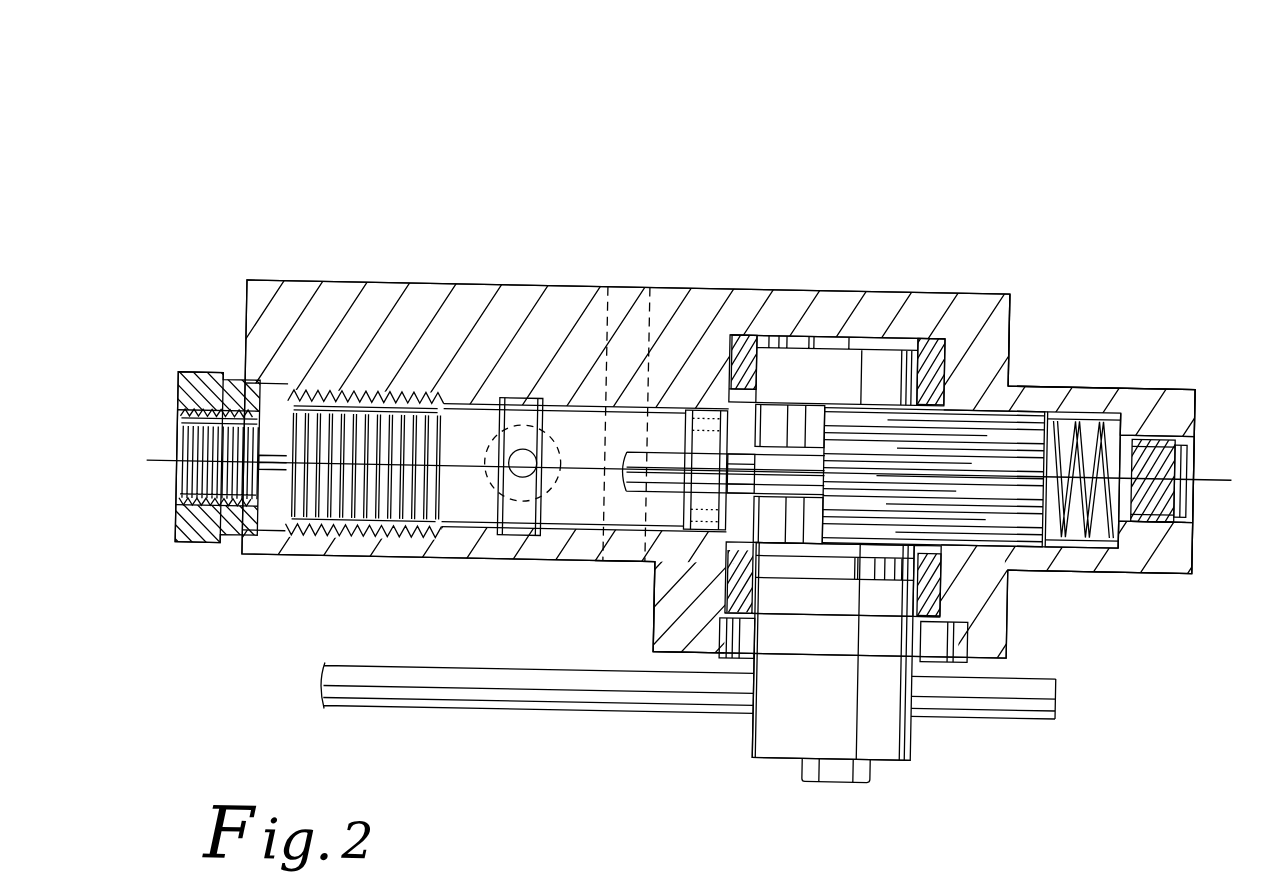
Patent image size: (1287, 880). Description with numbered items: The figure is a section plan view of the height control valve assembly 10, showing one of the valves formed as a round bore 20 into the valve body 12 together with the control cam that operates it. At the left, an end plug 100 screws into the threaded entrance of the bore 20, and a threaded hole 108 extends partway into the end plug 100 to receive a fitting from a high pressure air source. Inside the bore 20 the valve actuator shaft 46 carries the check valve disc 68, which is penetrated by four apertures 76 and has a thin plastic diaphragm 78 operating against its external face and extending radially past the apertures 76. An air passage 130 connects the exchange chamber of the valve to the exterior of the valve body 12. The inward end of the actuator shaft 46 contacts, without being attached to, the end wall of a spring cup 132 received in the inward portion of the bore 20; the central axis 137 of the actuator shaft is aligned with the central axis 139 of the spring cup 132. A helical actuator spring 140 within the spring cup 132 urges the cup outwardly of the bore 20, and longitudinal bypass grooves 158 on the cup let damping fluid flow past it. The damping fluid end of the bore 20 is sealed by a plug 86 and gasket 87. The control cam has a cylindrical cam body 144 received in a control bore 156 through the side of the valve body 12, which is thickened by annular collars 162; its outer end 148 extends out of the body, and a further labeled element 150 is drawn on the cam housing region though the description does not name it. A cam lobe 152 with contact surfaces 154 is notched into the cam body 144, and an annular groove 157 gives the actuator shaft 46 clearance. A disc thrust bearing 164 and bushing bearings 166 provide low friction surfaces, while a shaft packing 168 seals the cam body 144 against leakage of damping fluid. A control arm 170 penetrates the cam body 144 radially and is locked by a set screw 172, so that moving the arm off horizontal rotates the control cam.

The height control valve assembly 10 is at (632, 167).
The valve body 12 is at (1012, 283).
The bore 20 is at (475, 526).
The valve actuator shaft 46 is at (628, 445).
The check valve disc 68 is at (692, 485).
The apertures 76 is at (665, 564).
The diaphragm 78 is at (685, 425).
The plug 86 is at (1194, 473).
The gasket 87 is at (1148, 510).
The end plug 100 is at (207, 543).
The threaded hole 108 is at (204, 478).
The air passage 130 is at (524, 405).
The spring cup 132 is at (1070, 525).
The central axis of the actuator shaft 137 is at (742, 468).
The central axis of the spring cup 139 is at (968, 457).
The actuator spring 140 is at (1130, 402).
The cam body 144 is at (886, 730).
The outer end 148 is at (792, 733).
The bearing housing 150 is at (883, 331).
The cam lobe 152 is at (795, 410).
The contact surfaces 154 is at (808, 525).
The control bore 156 is at (977, 358).
The annular groove 157 is at (663, 597).
The bypass grooves 158 is at (1060, 385).
The annular collars 162 is at (1013, 321).
The disc thrust bearing 164 is at (729, 649).
The bushing bearings 166 is at (941, 324).
The shaft packing 168 is at (902, 580).
The control arm 170 is at (603, 706).
The set screw 172 is at (842, 772).